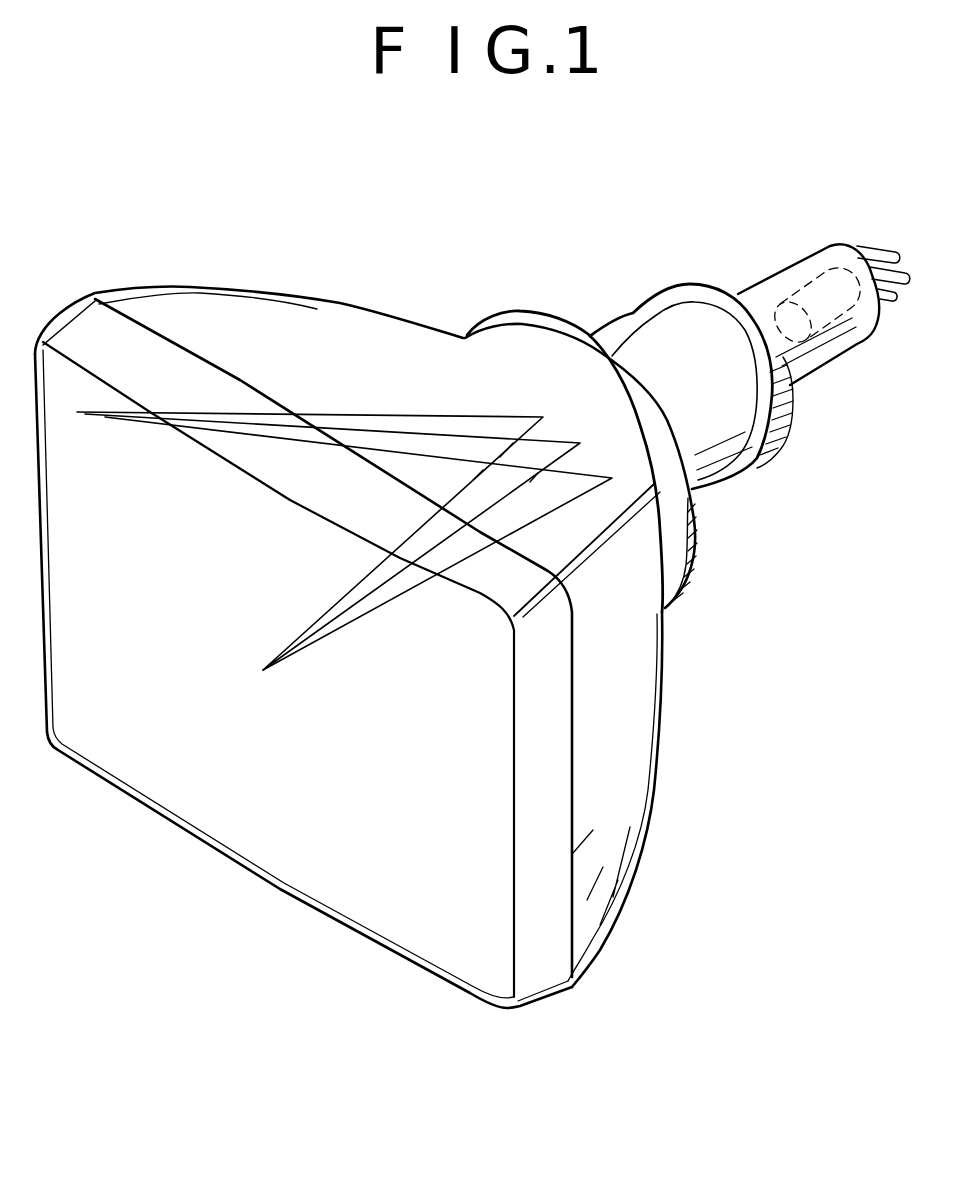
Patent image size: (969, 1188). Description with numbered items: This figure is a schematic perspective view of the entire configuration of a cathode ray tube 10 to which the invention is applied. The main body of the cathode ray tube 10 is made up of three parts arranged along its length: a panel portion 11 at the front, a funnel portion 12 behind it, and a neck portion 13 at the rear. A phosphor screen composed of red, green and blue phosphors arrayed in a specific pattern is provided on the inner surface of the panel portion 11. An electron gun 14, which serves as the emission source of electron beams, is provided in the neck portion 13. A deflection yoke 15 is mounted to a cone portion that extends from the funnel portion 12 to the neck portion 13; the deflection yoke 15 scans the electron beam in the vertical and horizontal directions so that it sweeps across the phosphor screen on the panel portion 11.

The cathode ray tube 10 is at (472, 672).
The panel portion 11 is at (287, 863).
The funnel portion 12 is at (615, 782).
The neck portion 13 is at (813, 377).
The electron gun 14 is at (849, 350).
The deflection yoke 15 is at (643, 350).